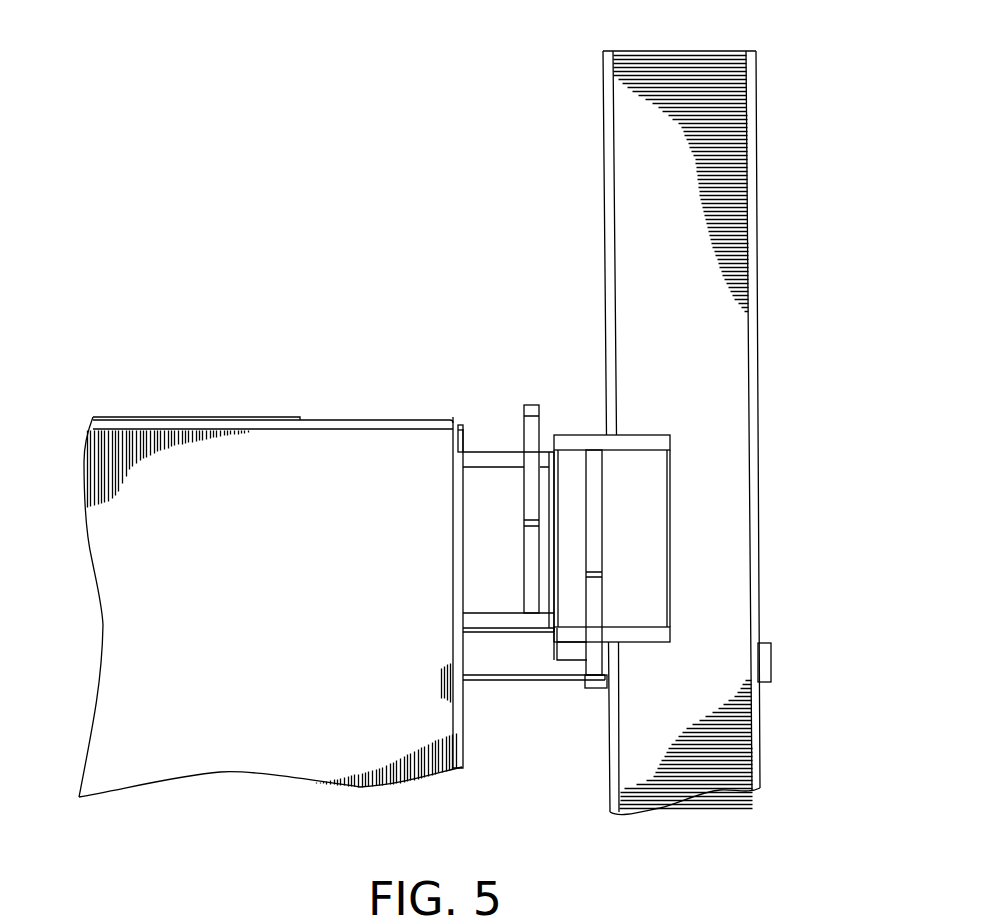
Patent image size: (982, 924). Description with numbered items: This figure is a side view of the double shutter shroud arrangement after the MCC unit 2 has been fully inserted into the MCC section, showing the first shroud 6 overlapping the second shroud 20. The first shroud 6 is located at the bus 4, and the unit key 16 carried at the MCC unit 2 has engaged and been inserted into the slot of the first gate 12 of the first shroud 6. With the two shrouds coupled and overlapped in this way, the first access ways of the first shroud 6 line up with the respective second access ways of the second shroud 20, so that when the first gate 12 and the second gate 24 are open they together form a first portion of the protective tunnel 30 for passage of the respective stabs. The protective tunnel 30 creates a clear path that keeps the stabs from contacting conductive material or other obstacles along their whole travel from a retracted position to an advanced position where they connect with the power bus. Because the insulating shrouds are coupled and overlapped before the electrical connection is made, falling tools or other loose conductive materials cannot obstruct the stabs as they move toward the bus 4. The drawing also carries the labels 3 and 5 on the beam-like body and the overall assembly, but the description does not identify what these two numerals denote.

The MCC unit 2 is at (142, 396).
The beam bottom flange 3 is at (458, 727).
The bus 4 is at (758, 212).
The connection assembly 5 is at (340, 808).
The first shroud 6 is at (590, 440).
The first gate 12 is at (592, 688).
The unit key 16 is at (568, 663).
The second shroud 20 is at (500, 452).
The second gate 24 is at (532, 405).
The protective tunnel 30 is at (436, 534).